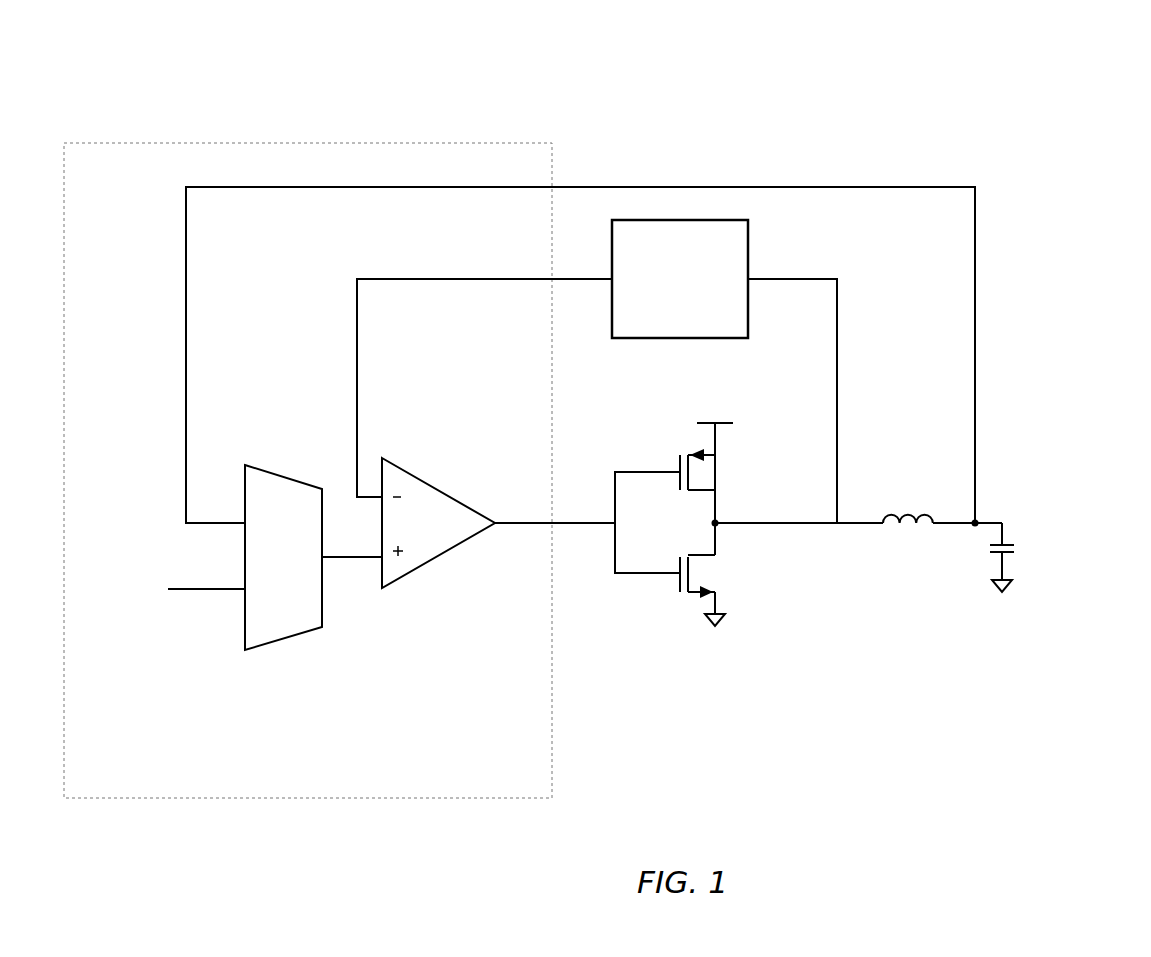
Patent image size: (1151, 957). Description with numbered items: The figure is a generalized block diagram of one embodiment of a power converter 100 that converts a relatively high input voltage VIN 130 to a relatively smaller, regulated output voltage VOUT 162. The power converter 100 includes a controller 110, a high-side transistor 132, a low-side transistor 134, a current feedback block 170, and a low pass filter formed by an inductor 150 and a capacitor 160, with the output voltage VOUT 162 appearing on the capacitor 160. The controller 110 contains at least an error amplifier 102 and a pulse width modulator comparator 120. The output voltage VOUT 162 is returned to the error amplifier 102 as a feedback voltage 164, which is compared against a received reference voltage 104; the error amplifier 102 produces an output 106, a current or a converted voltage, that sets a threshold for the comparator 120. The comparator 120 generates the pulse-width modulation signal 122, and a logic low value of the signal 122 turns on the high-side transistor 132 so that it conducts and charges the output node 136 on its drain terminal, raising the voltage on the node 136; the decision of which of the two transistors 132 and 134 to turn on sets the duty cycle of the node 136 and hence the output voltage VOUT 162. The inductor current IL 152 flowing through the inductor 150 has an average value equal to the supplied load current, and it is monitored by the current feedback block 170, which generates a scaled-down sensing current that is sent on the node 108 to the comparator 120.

The power converter 100 is at (1028, 76).
The error amplifier 102 is at (283, 557).
The reference voltage 104 is at (219, 589).
The output current 106 is at (364, 557).
The node 108 is at (490, 279).
The controller 110 is at (308, 470).
The PWM comparator 120 is at (402, 470).
The PWM signal 122 is at (597, 523).
The input voltage 130 is at (717, 426).
The high-side transistor 132 is at (692, 472).
The low-side transistor 134 is at (717, 552).
The output node 136 is at (813, 523).
The inductor 150 is at (890, 514).
The inductor current 152 is at (912, 540).
The capacitor 160 is at (996, 556).
The output voltage 162 is at (995, 522).
The feedback voltage 164 is at (206, 523).
The current feedback block 170 is at (680, 279).